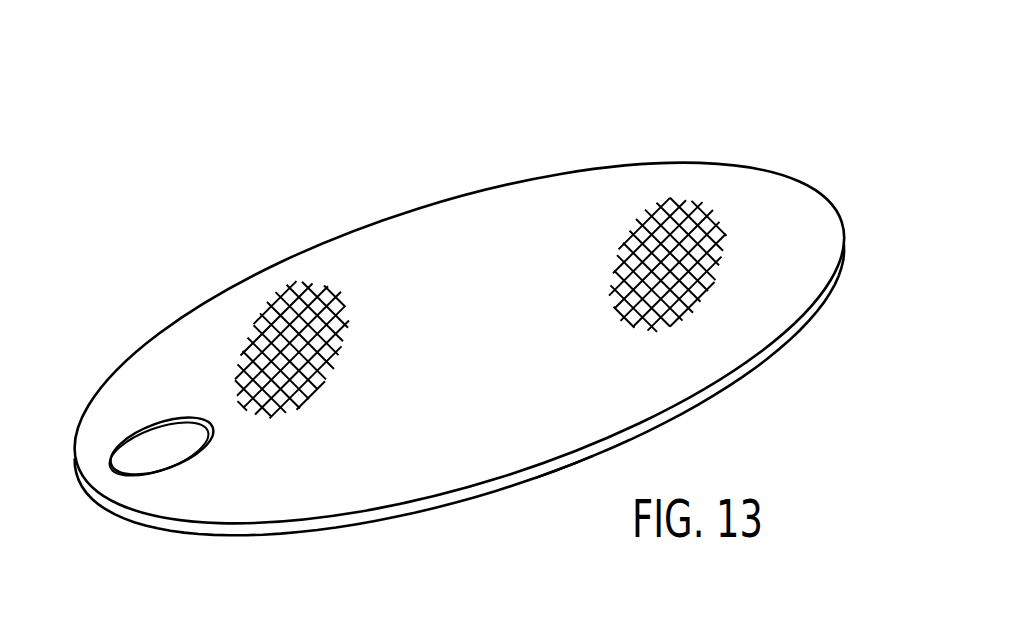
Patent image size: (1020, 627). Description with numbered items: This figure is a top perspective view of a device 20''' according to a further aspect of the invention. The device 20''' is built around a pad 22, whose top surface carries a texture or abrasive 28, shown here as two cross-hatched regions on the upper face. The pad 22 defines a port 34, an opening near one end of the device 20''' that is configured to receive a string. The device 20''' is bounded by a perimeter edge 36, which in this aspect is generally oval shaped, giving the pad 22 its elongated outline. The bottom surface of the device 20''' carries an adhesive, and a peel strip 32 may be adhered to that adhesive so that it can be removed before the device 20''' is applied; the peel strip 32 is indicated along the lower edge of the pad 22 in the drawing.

The device 20''' is at (454, 338).
The pad 22 is at (345, 543).
The texture or abrasive 28 is at (307, 312).
The peel strip 32 is at (562, 478).
The port 34 is at (160, 442).
The perimeter edge 36 is at (212, 297).